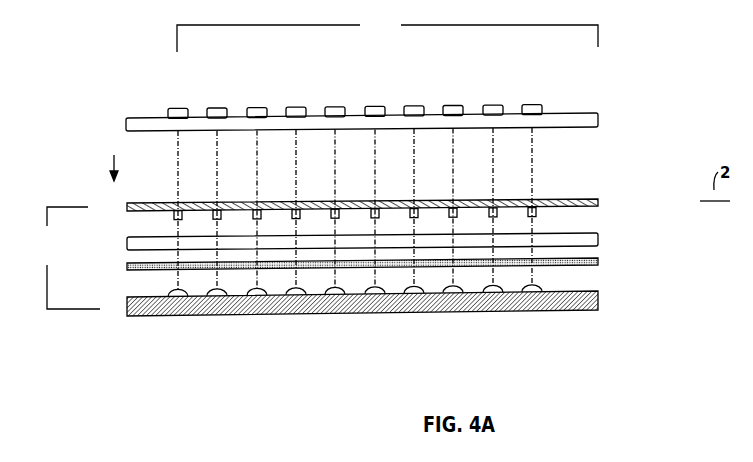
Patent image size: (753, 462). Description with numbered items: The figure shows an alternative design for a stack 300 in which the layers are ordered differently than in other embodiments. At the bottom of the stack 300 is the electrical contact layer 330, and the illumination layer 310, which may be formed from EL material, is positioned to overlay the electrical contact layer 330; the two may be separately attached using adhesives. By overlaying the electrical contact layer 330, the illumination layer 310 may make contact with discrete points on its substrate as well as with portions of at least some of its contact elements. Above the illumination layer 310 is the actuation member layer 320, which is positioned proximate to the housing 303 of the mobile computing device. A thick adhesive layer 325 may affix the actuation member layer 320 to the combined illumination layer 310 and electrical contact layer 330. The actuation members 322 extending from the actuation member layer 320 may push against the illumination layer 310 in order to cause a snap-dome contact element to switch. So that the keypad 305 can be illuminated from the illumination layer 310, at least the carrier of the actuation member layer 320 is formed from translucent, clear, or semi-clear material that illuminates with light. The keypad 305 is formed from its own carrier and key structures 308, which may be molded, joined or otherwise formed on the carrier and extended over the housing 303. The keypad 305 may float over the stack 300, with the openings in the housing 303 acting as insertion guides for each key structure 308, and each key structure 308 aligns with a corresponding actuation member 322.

The keypad 305 is at (387, 35).
The key structures 308 is at (375, 106).
The housing 303 is at (544, 121).
The actuation member layer 320 is at (577, 201).
The actuation members 322 is at (536, 216).
The thick adhesive layer 325 is at (600, 233).
The illumination layer 310 is at (600, 259).
The electrical contact layer 330 is at (600, 297).
The stack 300 is at (61, 258).